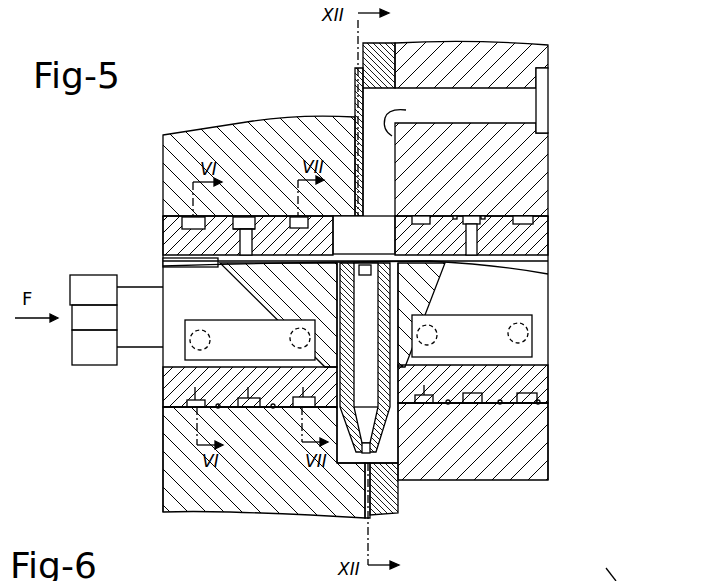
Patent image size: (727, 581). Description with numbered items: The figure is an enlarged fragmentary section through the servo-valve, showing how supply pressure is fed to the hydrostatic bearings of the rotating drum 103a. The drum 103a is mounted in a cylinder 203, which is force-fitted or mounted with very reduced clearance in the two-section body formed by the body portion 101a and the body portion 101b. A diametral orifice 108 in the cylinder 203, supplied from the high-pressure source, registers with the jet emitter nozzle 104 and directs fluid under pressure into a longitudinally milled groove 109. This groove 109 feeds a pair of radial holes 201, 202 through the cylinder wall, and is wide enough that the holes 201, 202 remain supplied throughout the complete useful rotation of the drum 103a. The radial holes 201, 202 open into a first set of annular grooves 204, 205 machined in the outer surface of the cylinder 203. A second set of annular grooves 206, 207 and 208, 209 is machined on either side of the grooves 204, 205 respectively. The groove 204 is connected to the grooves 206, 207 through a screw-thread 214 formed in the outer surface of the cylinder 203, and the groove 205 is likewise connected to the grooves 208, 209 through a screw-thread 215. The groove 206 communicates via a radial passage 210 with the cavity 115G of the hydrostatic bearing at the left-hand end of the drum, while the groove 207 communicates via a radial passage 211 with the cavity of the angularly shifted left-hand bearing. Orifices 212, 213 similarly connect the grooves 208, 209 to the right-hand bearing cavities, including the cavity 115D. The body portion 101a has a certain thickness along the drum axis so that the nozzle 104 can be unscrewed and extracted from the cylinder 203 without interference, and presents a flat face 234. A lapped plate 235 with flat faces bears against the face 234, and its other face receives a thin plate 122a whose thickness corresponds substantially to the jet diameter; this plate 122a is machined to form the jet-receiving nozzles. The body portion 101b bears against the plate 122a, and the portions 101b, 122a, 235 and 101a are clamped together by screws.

In FIG. 5, the valve body portion 101a is at (540, 440).
In FIG. 5, the valve body portion 101b is at (190, 486).
In FIG. 5, the drum 103a is at (527, 293).
In FIG. 5, the jet emitter nozzle 104 is at (385, 318).
In FIG. 5, the diametral orifice 108 is at (373, 222).
In FIG. 5, the longitudinally milled groove 109 is at (548, 272).
In FIG. 6, the longitudinally milled groove 109 is at (605, 564).
In FIG. 5, the hydrostatic bearing cavity 115G is at (249, 341).
In FIG. 5, the hydrostatic bearing cavity 115D is at (472, 337).
In FIG. 5, the thin plate 122a is at (330, 560).
In FIG. 5, the radial hole 201 is at (215, 250).
In FIG. 5, the radial hole 202 is at (500, 236).
In FIG. 5, the cylinder 203 is at (520, 388).
In FIG. 5, the annular groove 204 is at (248, 208).
In FIG. 5, the annular groove 205 is at (475, 210).
In FIG. 5, the annular groove 206 is at (195, 404).
In FIG. 5, the annular groove 207 is at (300, 408).
In FIG. 5, the annular groove 208 is at (425, 407).
In FIG. 5, the annular groove 209 is at (522, 401).
In FIG. 5, the radial passage 210 is at (192, 350).
In FIG. 5, the radial passage 211 is at (293, 328).
In FIG. 5, the orifice 212 is at (437, 330).
In FIG. 5, the orifice 213 is at (530, 322).
In FIG. 5, the screw-thread 214 is at (240, 217).
In FIG. 5, the screw-thread 215 is at (437, 214).
In FIG. 5, the face 234 is at (411, 116).
In FIG. 5, the lapped plate 235 is at (378, 505).